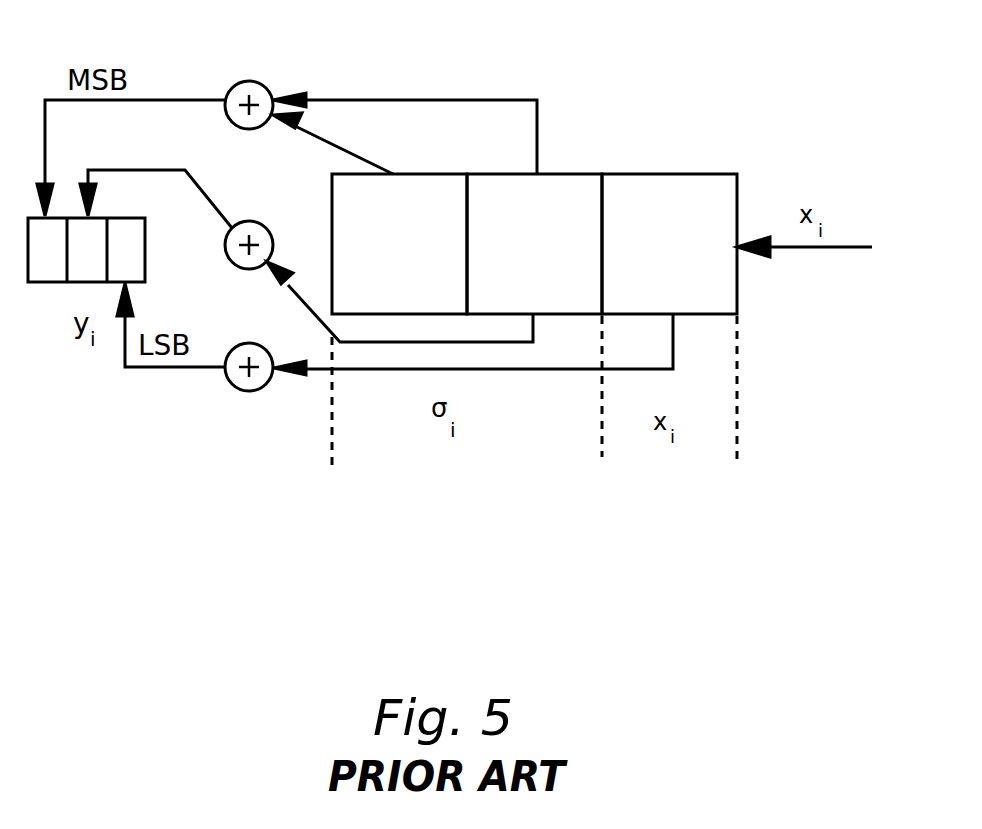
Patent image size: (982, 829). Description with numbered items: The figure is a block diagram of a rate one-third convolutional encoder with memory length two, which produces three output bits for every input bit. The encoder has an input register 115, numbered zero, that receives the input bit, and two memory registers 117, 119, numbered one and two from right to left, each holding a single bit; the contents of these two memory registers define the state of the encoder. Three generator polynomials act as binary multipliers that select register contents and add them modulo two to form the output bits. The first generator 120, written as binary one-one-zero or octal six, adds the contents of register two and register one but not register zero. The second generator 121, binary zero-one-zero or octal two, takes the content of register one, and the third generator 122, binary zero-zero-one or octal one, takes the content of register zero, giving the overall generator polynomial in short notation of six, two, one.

The input register 115 is at (677, 174).
The memory register 117 is at (567, 174).
The memory register 119 is at (438, 174).
The first generator 120 is at (249, 81).
The second generator 121 is at (249, 221).
The third generator 122 is at (249, 391).